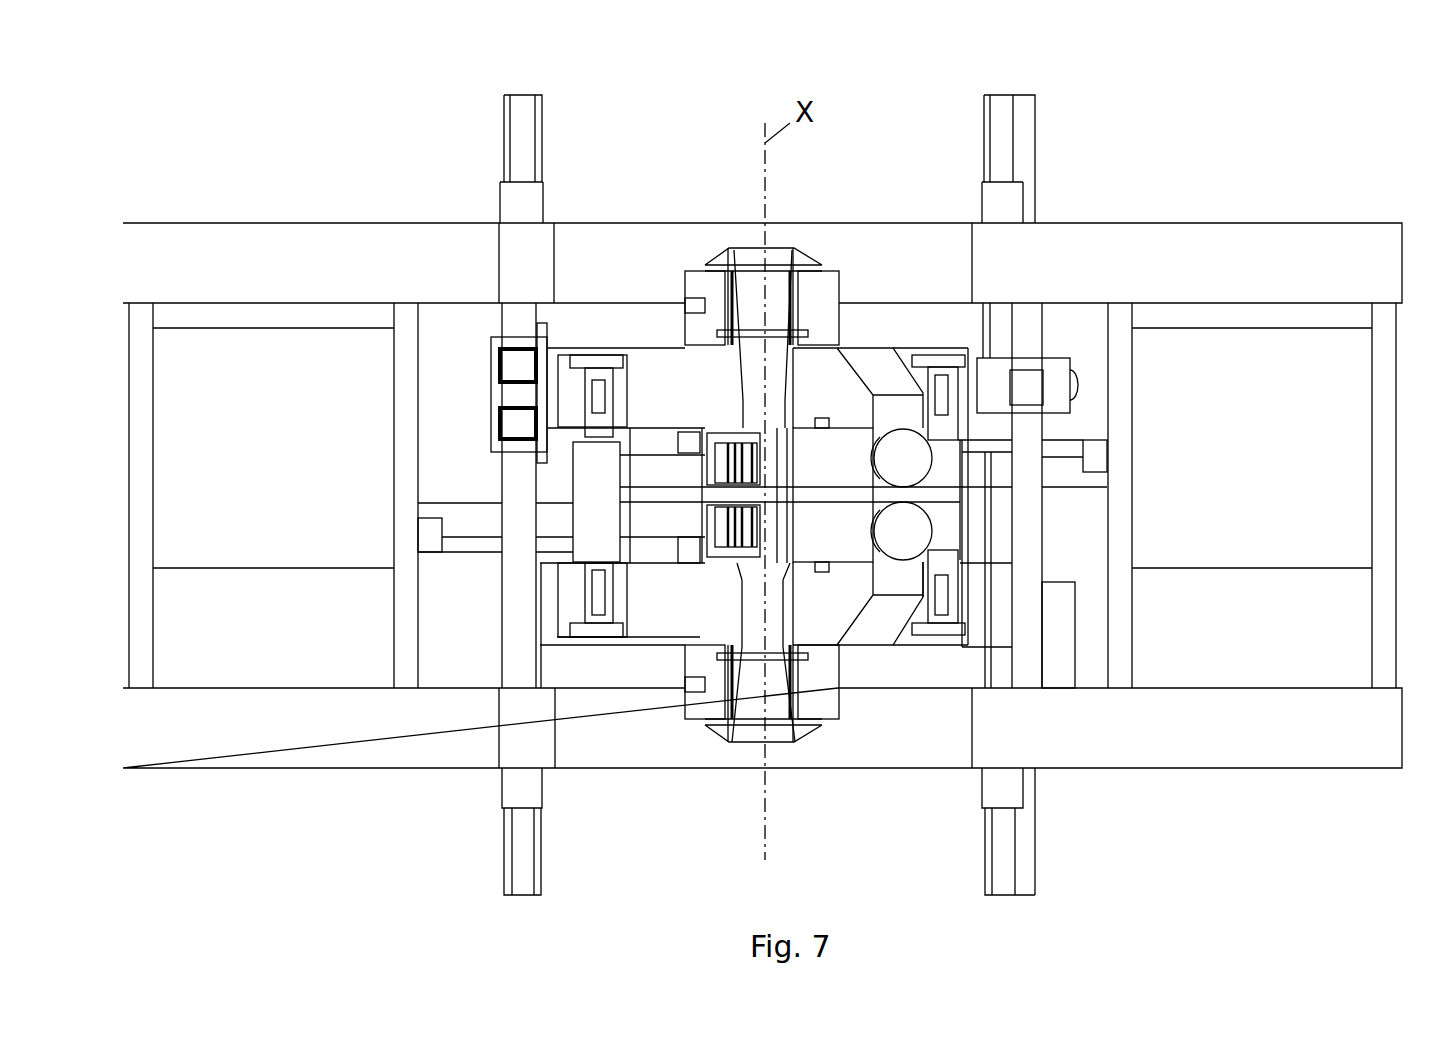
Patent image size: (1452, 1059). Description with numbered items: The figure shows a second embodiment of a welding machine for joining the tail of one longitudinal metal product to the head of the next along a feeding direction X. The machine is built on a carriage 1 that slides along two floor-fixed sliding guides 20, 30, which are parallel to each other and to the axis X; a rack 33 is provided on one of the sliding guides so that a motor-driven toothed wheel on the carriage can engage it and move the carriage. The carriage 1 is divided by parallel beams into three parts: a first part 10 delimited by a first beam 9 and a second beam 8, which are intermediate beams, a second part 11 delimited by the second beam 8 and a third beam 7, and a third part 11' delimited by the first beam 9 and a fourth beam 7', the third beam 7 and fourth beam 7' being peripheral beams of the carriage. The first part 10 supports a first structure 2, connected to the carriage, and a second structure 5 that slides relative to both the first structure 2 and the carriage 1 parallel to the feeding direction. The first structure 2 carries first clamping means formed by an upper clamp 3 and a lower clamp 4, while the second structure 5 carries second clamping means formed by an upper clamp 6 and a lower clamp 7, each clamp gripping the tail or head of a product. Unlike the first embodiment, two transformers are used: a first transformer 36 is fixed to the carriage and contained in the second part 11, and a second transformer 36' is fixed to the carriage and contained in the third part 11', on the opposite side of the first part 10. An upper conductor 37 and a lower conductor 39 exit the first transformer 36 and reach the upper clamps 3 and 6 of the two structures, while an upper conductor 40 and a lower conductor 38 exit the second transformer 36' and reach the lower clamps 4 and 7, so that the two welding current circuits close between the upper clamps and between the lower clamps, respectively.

The carriage 1 is at (245, 215).
The first structure 2 is at (838, 598).
The upper clamp 3 is at (768, 560).
The lower clamp 4 is at (732, 533).
The second structure 5 is at (840, 458).
The upper clamp 6 is at (766, 398).
The third beam 7 is at (1047, 411).
The fourth beam 7' is at (122, 495).
The second beam 8 is at (1023, 582).
The first beam 9 is at (519, 620).
The first part 10 is at (833, 788).
The second part 11 is at (1099, 793).
The third part 11' is at (399, 771).
The sliding guide 20 is at (528, 853).
The sliding guide 30 is at (1002, 857).
The rack 33 is at (1028, 862).
The first transformer 36 is at (1280, 495).
The second transformer 36' is at (249, 495).
The upper conductor 37 is at (1072, 472).
The lower conductor 38 is at (487, 543).
The lower conductor 39 is at (1062, 447).
The upper conductor 40 is at (448, 517).